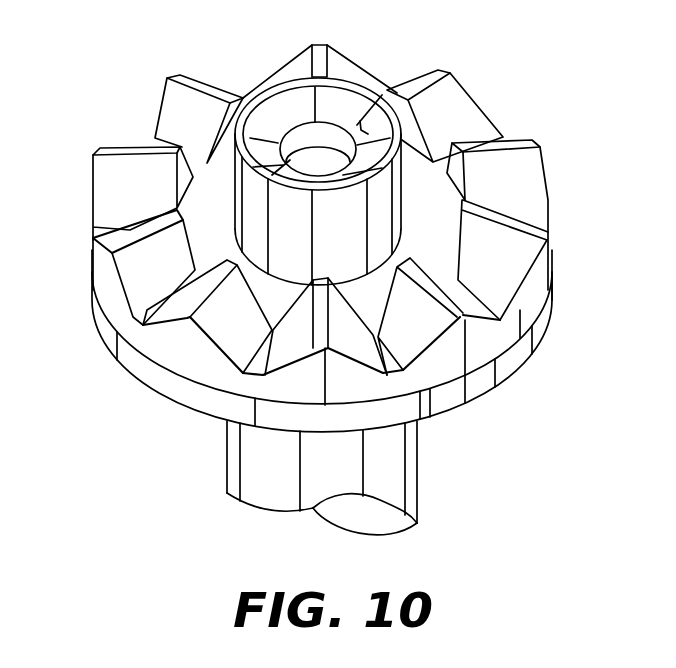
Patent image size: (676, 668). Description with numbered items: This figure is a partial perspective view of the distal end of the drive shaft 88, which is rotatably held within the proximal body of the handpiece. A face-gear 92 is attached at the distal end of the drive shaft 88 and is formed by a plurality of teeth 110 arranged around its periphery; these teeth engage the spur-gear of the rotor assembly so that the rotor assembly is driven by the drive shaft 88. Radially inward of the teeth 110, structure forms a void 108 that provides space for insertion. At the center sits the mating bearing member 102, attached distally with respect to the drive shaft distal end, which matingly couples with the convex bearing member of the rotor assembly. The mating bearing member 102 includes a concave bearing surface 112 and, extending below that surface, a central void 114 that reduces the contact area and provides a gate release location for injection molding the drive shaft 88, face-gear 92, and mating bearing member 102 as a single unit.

The drive shaft 88 is at (227, 487).
The face-gear 92 is at (510, 367).
The mating bearing member 102 is at (400, 222).
The void 108 is at (433, 212).
The teeth 110 is at (163, 88).
The concave bearing surface 112 is at (384, 101).
The central void 114 is at (313, 160).